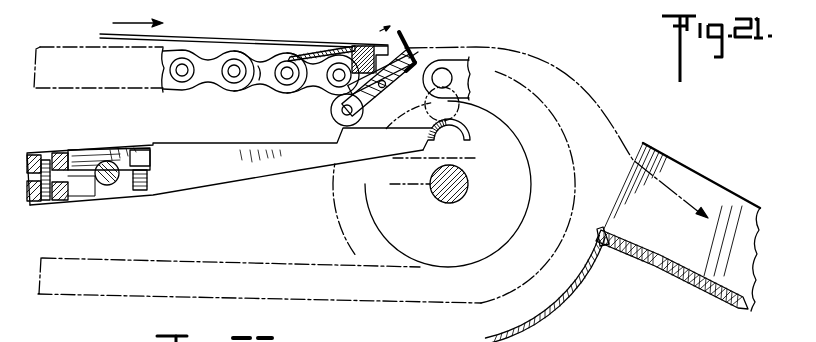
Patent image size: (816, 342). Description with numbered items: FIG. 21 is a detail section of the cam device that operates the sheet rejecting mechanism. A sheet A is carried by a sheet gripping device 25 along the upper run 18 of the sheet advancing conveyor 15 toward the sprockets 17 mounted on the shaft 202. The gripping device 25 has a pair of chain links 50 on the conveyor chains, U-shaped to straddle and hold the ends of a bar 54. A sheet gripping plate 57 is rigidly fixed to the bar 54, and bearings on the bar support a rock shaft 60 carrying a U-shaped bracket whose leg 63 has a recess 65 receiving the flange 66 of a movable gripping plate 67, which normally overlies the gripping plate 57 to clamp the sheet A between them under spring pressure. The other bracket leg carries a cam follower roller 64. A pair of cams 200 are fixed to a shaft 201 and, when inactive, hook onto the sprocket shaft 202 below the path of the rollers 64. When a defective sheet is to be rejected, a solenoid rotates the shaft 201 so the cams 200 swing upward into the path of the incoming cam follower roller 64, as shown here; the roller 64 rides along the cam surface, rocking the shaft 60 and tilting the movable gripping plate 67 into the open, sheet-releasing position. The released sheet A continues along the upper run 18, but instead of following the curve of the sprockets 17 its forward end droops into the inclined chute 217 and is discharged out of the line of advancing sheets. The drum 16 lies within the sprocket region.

The sheet advancing conveyor 15 is at (75, 40).
The upper run 18 is at (34, 56).
The sheet A is at (238, 38).
The chain links 50 is at (317, 92).
The sheet gripping plate 57 is at (354, 45).
The sheet gripping device 25 is at (362, 36).
The bar 54 is at (364, 50).
The bracket leg 63 is at (373, 116).
The rock shaft 60 is at (394, 98).
The cam follower roller 64 is at (331, 115).
The recess 65 is at (400, 31).
The movable gripping plate 67 is at (413, 38).
The flange 66 is at (429, 66).
The cam 200 is at (246, 162).
The shaft 201 is at (110, 186).
The sprocket 17 is at (354, 241).
The drum 16 is at (490, 248).
The shaft 202 is at (442, 203).
The inclined chute 217 is at (694, 281).